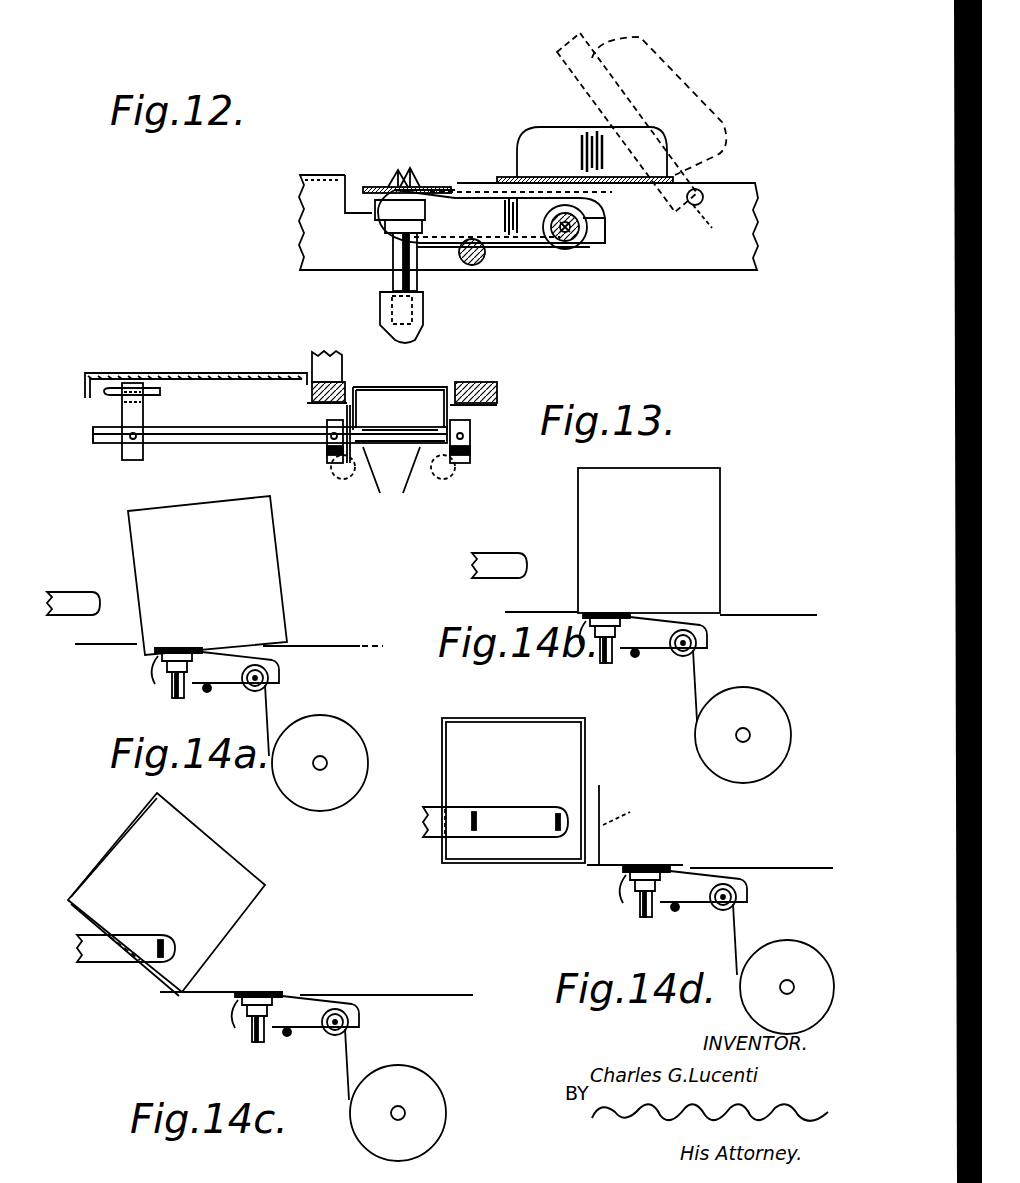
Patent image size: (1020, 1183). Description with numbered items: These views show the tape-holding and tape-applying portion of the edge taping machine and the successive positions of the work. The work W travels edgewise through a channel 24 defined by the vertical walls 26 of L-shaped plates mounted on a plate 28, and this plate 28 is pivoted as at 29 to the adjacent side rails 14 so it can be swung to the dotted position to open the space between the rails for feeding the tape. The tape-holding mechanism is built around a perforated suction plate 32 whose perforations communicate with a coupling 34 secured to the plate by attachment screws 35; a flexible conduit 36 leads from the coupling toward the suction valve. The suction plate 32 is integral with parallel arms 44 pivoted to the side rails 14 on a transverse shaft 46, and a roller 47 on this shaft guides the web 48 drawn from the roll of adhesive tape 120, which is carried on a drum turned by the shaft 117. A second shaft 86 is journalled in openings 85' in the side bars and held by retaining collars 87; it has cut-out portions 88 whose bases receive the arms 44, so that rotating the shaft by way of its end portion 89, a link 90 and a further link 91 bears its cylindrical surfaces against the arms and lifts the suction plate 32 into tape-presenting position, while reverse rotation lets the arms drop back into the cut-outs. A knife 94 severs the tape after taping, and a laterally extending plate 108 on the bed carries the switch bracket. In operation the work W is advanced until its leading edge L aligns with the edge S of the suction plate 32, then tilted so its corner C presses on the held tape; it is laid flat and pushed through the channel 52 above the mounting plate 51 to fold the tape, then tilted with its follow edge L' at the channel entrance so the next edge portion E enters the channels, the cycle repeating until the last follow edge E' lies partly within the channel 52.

In FIG. 13, the side rails 14 is at (312, 400).
In FIG. 14A, the channel 24 is at (328, 623).
In FIG. 14B, the channel 24 is at (710, 594).
In FIG. 14D, the channel 24 is at (755, 849).
In FIG. 12, the vertical walls 26 is at (726, 162).
In FIG. 12, the plate 28 is at (582, 42).
In FIG. 14A, the plate 28 is at (334, 646).
In FIG. 14B, the plate 28 is at (768, 615).
In FIG. 14C, the plate 28 is at (380, 996).
In FIG. 14D, the plate 28 is at (770, 869).
In FIG. 12, the pivotal connection 29 is at (708, 219).
In FIG. 12, the suction plate 32 is at (375, 190).
In FIG. 13, the suction plate 32 is at (400, 387).
In FIG. 14A, the suction plate 32 is at (155, 668).
In FIG. 14B, the suction plate 32 is at (586, 645).
In FIG. 14C, the suction plate 32 is at (236, 1000).
In FIG. 14D, the suction plate 32 is at (615, 880).
In FIG. 12, the coupling 34 is at (455, 196).
In FIG. 14A, the coupling 34 is at (168, 680).
In FIG. 14B, the coupling 34 is at (616, 655).
In FIG. 14C, the coupling 34 is at (246, 1014).
In FIG. 14D, the coupling 34 is at (634, 893).
In FIG. 12, the attachment screws 35 is at (412, 184).
In FIG. 12, the flexible conduit 36 is at (424, 306).
In FIG. 12, the arms 44 is at (495, 218).
In FIG. 13, the arms 44 is at (437, 404).
In FIG. 12, the shaft 46 is at (590, 229).
In FIG. 12, the roller 47 is at (580, 248).
In FIG. 14A, the roller 47 is at (273, 674).
In FIG. 14B, the roller 47 is at (700, 641).
In FIG. 14C, the roller 47 is at (352, 1022).
In FIG. 14D, the roller 47 is at (745, 894).
In FIG. 14A, the web 48 is at (272, 710).
In FIG. 14B, the web 48 is at (700, 684).
In FIG. 14A, the mounting plate 51 is at (100, 644).
In FIG. 14B, the mounting plate 51 is at (520, 612).
In FIG. 14C, the mounting plate 51 is at (165, 998).
In FIG. 14D, the mounting plate 51 is at (565, 868).
In FIG. 14A, the channel 52 is at (68, 594).
In FIG. 14B, the channel 52 is at (508, 568).
In FIG. 14C, the channel 52 is at (118, 977).
In FIG. 14D, the channel 52 is at (489, 834).
In FIG. 13, the openings 85' is at (386, 475).
In FIG. 12, the shaft 86 is at (480, 265).
In FIG. 13, the shaft 86 is at (226, 430).
In FIG. 14A, the shaft 86 is at (213, 692).
In FIG. 14B, the shaft 86 is at (641, 657).
In FIG. 14C, the shaft 86 is at (294, 1036).
In FIG. 14D, the shaft 86 is at (681, 913).
In FIG. 13, the retaining collars 87 is at (327, 442).
In FIG. 13, the cut-out portions 88 is at (391, 477).
In FIG. 13, the end portion 89 is at (100, 445).
In FIG. 13, the link 90 is at (145, 417).
In FIG. 13, the link 91 is at (132, 388).
In FIG. 14D, the knife 94 is at (628, 825).
In FIG. 13, the plate 108 is at (200, 373).
In FIG. 14A, the shaft 117 is at (327, 760).
In FIG. 14B, the shaft 117 is at (750, 733).
In FIG. 14C, the shaft 117 is at (405, 1110).
In FIG. 14D, the shaft 117 is at (790, 982).
In FIG. 14A, the roll of adhesive tape 120 is at (368, 753).
In FIG. 14B, the roll of adhesive tape 120 is at (792, 740).
In FIG. 14C, the roll of adhesive tape 120 is at (447, 1117).
In FIG. 14D, the roll of adhesive tape 120 is at (742, 1006).
In FIG. 14A, the work W is at (286, 540).
In FIG. 14B, the work W is at (729, 520).
In FIG. 14C, the work W is at (266, 910).
In FIG. 14D, the work W is at (510, 718).
In FIG. 14A, the leading edge L is at (111, 563).
In FIG. 14A, the follow edge L' is at (298, 585).
In FIG. 14A, the corner C is at (158, 652).
In FIG. 14A, the edge S is at (138, 664).
In FIG. 14C, the edge portion E is at (239, 942).
In FIG. 14D, the follow edge E' is at (609, 757).